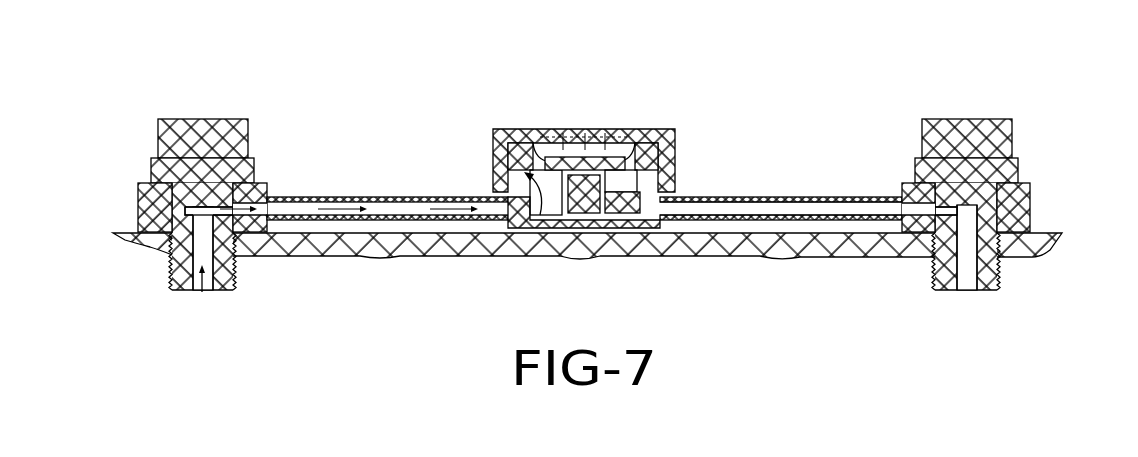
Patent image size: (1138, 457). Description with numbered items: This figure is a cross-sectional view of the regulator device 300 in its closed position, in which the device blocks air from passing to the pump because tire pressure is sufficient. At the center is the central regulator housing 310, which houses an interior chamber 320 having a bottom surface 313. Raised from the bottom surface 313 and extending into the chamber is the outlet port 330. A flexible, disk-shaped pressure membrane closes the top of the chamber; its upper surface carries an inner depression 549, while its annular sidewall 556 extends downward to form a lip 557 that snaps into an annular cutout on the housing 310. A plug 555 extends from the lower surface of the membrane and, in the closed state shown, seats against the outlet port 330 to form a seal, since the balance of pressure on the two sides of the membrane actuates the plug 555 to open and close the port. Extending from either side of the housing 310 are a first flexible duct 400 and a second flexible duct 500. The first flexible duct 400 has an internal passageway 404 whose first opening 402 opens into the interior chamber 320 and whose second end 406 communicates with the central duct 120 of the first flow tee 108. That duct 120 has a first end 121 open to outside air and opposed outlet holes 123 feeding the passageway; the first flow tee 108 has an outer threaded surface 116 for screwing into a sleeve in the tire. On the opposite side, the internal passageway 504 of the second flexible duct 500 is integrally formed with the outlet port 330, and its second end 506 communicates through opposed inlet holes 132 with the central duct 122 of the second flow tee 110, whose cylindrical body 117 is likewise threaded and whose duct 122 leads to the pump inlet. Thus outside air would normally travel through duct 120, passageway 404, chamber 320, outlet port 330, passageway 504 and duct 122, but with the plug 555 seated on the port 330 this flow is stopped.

The regulator device 300 is at (377, 56).
The first flow tee 108 is at (196, 112).
The second flow tee 110 is at (976, 112).
The outer threaded surface 116 is at (172, 275).
The cylindrical body 117 is at (997, 272).
The central duct 120 is at (200, 285).
The first end 121 is at (228, 292).
The central duct 122 is at (968, 283).
The outlet holes 123 is at (185, 210).
The inlet holes 132 is at (985, 210).
The central regulator housing 310 is at (677, 175).
The bottom surface 313 is at (636, 182).
The interior chamber 320 is at (608, 185).
The outlet port 330 is at (582, 182).
The first flexible duct 400 is at (372, 197).
The first opening 402 is at (545, 212).
The internal passageway 404 is at (390, 210).
The second end 406 is at (252, 188).
The second flexible duct 500 is at (778, 197).
The internal passageway 504 is at (815, 212).
The second end 506 is at (925, 197).
The inner depression 549 is at (602, 152).
The plug 555 is at (582, 166).
The annular sidewall 556 is at (500, 160).
The lip 557 is at (520, 185).